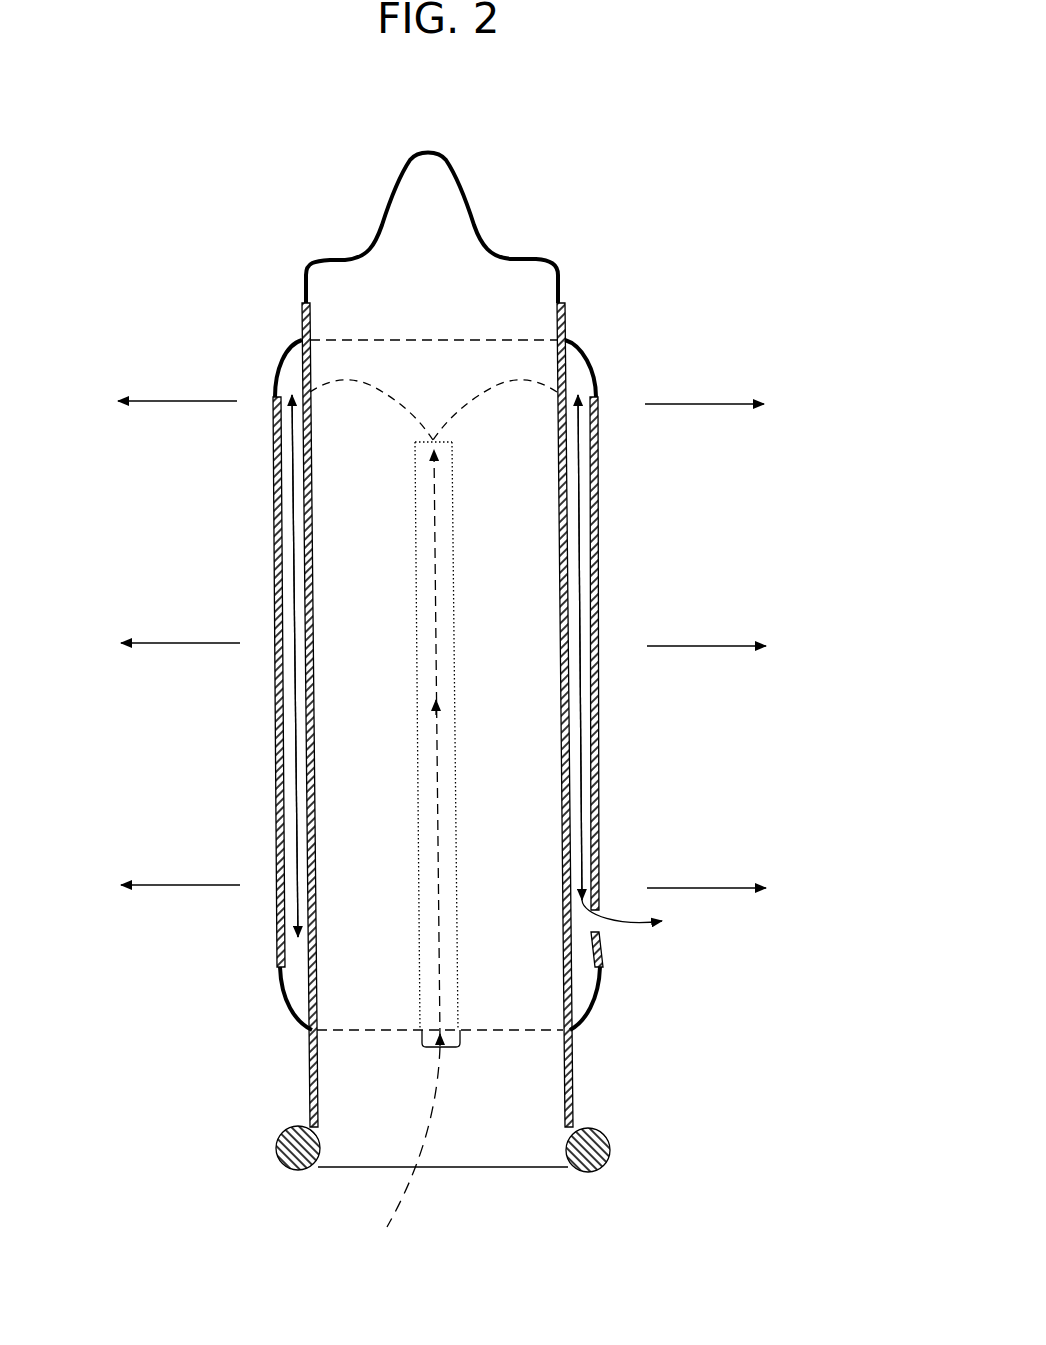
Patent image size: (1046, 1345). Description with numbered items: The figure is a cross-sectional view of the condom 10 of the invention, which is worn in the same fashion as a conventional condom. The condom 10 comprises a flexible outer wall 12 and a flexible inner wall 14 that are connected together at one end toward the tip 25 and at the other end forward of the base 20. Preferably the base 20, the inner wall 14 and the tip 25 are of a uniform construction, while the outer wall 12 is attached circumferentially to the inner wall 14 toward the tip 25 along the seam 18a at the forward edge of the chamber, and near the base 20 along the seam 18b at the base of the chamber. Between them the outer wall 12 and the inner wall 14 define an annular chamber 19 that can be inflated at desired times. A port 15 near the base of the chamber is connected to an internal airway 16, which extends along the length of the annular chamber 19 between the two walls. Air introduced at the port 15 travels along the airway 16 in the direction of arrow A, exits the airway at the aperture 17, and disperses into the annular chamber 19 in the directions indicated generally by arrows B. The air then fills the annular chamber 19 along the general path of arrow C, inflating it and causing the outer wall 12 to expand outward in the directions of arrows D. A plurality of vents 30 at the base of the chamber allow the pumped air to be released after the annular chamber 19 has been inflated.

The condom 10 is at (688, 185).
The outer wall 12 is at (273, 553).
The inner wall 14 is at (312, 541).
The port 15 is at (457, 1047).
The internal airway 16 is at (420, 790).
The aperture 17 is at (423, 440).
The seam 18a is at (485, 338).
The seam 18b is at (360, 1033).
The annular chamber 19 is at (292, 774).
The base 20 is at (276, 1160).
The tip 25 is at (492, 185).
The vents 30 is at (613, 942).
The arrow A is at (440, 877).
The arrows B is at (433, 396).
The arrow C is at (295, 715).
The arrows D is at (442, 670).